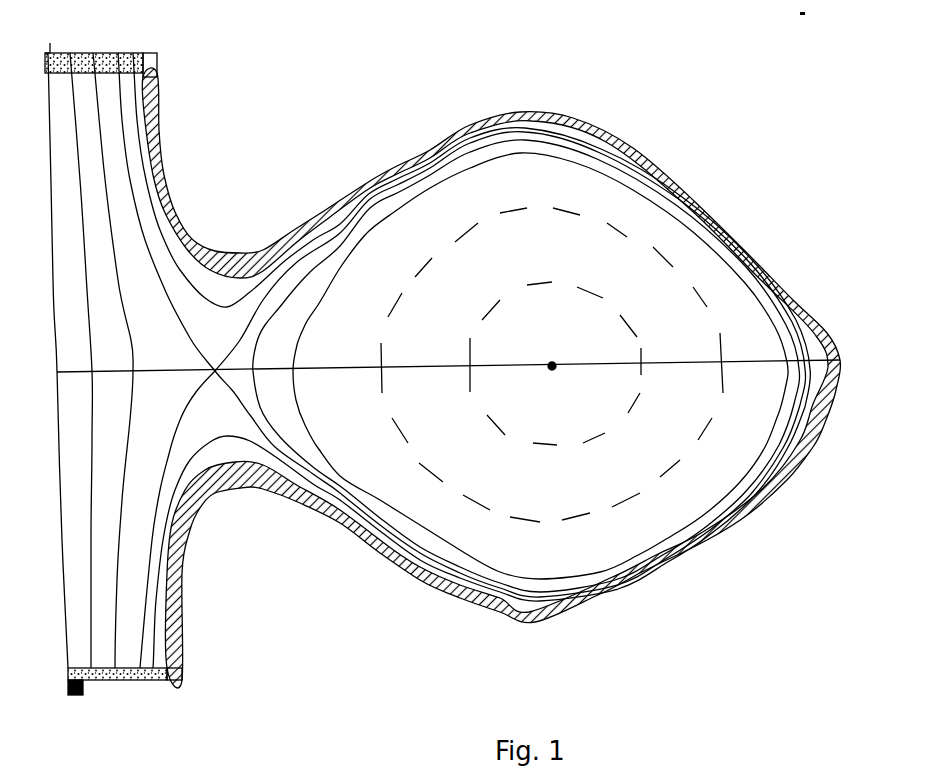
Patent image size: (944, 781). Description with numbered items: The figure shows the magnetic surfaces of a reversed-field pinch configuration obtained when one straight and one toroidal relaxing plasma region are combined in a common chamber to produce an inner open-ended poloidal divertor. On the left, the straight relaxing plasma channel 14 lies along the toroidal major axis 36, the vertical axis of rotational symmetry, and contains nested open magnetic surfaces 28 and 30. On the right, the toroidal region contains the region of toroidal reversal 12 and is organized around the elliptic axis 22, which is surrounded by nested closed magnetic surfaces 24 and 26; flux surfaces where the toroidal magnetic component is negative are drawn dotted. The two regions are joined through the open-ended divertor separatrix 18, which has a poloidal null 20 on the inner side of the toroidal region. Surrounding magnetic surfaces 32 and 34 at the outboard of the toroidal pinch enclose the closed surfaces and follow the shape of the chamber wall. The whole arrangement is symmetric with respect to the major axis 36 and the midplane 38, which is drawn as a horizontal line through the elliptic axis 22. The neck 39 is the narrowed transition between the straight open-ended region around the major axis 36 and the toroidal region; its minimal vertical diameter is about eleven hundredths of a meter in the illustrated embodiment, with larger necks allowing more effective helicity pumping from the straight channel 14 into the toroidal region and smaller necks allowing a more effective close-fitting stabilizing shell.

The region of toroidal reversal 12 is at (526, 366).
The straight relaxing plasma channel 14 is at (448, 385).
The open-ended divertor separatrix 18 is at (187, 408).
The poloidal null 20 is at (207, 365).
The elliptic axis 22 is at (535, 354).
The nested closed magnetic surface 24 is at (428, 470).
The nested closed magnetic surface 26 is at (505, 435).
The nested open magnetic surface 28 is at (78, 233).
The nested open magnetic surface 30 is at (115, 287).
The surrounding magnetic surface 32 is at (243, 433).
The surrounding magnetic surface 34 is at (491, 378).
The toroidal major axis 36 is at (47, 175).
The midplane 38 is at (707, 357).
The neck 39 is at (471, 230).